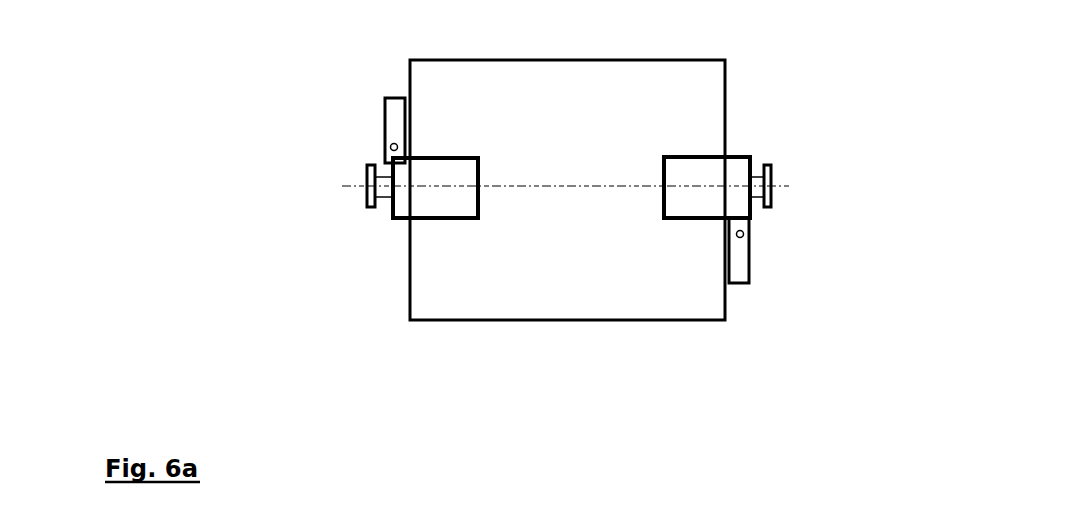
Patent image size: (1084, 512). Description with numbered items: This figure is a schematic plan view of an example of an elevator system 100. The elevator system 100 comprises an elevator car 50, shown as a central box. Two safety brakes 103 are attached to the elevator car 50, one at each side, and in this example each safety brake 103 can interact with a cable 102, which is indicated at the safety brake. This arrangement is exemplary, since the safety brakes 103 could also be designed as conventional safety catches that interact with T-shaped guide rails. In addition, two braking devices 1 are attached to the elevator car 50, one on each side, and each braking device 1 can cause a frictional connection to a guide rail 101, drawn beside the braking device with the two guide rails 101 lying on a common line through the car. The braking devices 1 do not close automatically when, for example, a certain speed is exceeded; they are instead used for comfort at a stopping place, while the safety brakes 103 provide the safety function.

The elevator system 100 is at (818, 99).
The elevator car 50 is at (448, 292).
The braking device 1 is at (682, 207).
The guide rail 101 is at (378, 188).
The cable 102 is at (390, 145).
The safety brake 103 is at (397, 128).